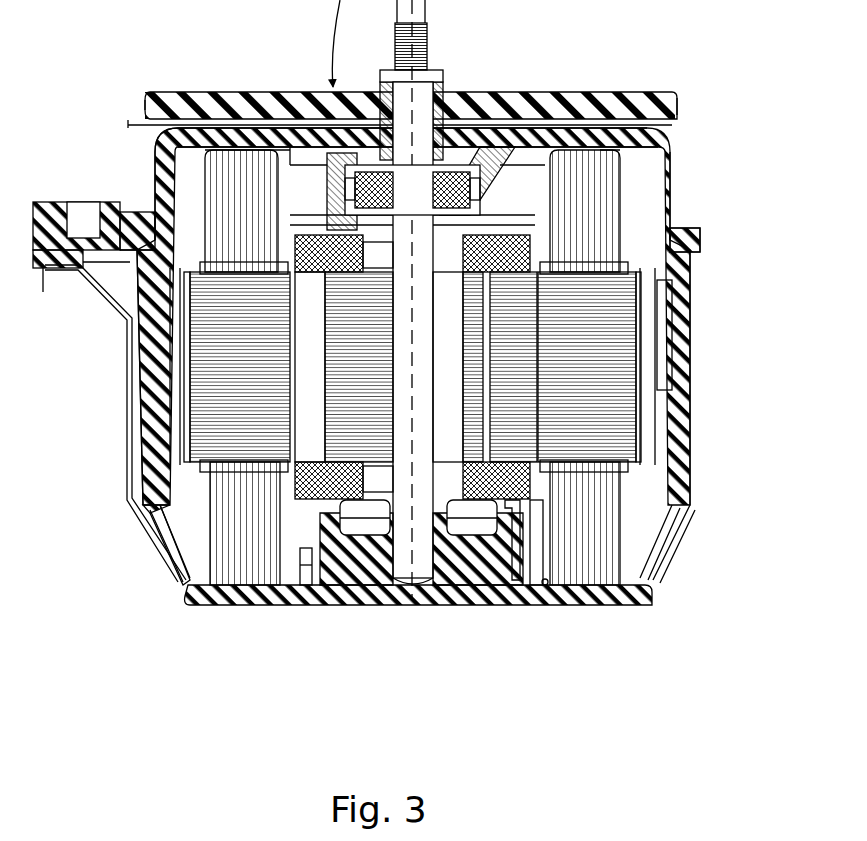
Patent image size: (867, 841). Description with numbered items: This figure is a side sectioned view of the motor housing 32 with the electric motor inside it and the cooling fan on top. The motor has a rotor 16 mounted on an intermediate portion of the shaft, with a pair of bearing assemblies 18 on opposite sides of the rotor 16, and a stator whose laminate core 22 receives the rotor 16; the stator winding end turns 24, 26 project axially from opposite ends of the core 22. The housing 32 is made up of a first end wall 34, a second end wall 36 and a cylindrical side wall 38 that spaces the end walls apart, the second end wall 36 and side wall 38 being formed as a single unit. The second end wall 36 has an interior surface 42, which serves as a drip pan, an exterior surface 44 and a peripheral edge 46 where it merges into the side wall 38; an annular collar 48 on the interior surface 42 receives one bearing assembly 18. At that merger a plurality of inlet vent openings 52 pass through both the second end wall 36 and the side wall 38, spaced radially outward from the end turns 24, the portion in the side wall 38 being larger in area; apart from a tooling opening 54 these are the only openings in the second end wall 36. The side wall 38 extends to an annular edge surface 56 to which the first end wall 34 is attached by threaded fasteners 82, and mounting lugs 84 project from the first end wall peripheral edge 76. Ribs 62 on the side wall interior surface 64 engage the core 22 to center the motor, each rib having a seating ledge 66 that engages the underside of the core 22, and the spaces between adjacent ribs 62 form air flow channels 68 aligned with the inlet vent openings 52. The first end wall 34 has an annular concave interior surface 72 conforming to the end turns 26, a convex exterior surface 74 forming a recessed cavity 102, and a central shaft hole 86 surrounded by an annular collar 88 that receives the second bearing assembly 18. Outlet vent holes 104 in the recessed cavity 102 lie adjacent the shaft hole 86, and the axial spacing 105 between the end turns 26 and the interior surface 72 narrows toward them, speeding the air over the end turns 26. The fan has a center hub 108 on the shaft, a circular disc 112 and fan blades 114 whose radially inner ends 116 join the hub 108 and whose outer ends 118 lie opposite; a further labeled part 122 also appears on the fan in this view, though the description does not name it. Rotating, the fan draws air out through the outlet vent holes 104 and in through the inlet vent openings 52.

The rotor 16 is at (531, 590).
The bearing assemblies 18 is at (327, 155).
The laminate core 22 is at (205, 485).
The end turns 24 is at (232, 585).
The end turns 26 is at (168, 190).
The housing 32 is at (128, 383).
The first end wall 34 is at (145, 167).
The second end wall 36 is at (255, 605).
The side wall 38 is at (140, 415).
The interior surface 42 is at (546, 588).
The exterior surface 44 is at (600, 606).
The peripheral edge 46 is at (636, 602).
The annular collar 48 is at (518, 560).
The inlet vent openings 52 is at (172, 578).
The tooling opening 54 is at (305, 612).
The annular edge surface 56 is at (130, 205).
The ribs 62 is at (168, 340).
The interior surface 64 is at (170, 462).
The seating ledge 66 is at (630, 220).
The air flow channels 68 is at (167, 352).
The interior surface 72 is at (200, 150).
The exterior surface 74 is at (207, 145).
The peripheral edge 76 is at (135, 222).
The threaded fasteners 82 is at (128, 220).
The mounting lugs 84 is at (44, 270).
The shaft hole 86 is at (452, 136).
The annular collar 88 is at (517, 133).
The recessed cavity 102 is at (445, 195).
The outlet vent holes 104 is at (283, 143).
The axial spacing 105 is at (196, 156).
The center hub 108 is at (352, 160).
The circular disc 112 is at (578, 92).
The fan blades 114 is at (146, 110).
The radially inner ends 116 is at (453, 90).
The outer ends 118 is at (133, 102).
The cover plate 122 is at (236, 120).